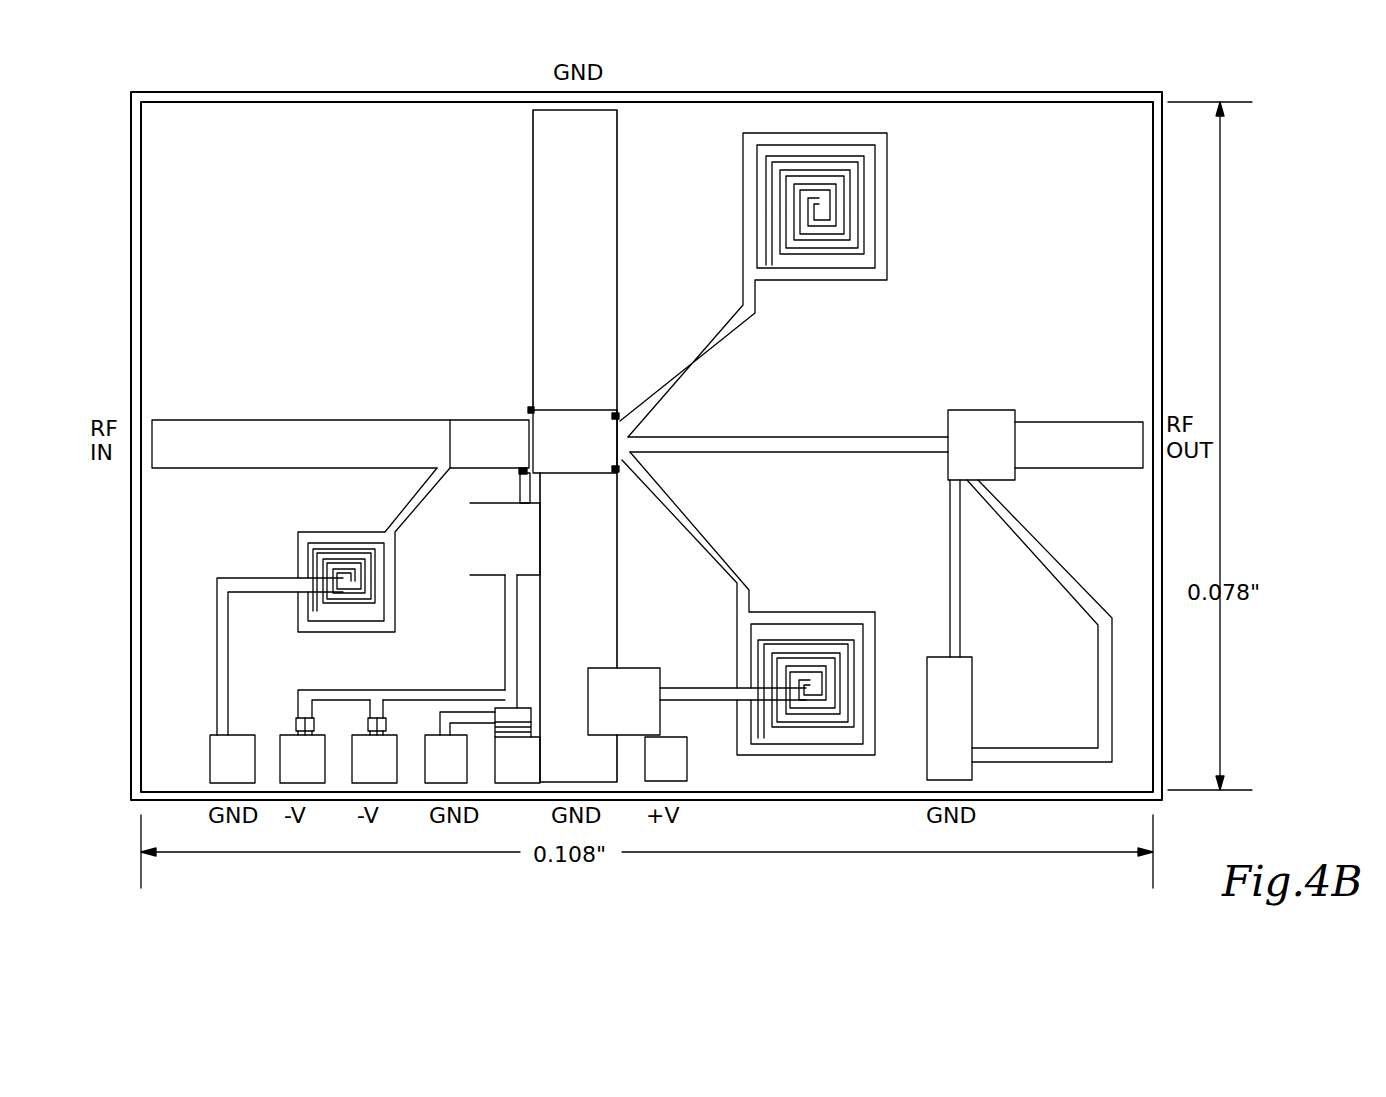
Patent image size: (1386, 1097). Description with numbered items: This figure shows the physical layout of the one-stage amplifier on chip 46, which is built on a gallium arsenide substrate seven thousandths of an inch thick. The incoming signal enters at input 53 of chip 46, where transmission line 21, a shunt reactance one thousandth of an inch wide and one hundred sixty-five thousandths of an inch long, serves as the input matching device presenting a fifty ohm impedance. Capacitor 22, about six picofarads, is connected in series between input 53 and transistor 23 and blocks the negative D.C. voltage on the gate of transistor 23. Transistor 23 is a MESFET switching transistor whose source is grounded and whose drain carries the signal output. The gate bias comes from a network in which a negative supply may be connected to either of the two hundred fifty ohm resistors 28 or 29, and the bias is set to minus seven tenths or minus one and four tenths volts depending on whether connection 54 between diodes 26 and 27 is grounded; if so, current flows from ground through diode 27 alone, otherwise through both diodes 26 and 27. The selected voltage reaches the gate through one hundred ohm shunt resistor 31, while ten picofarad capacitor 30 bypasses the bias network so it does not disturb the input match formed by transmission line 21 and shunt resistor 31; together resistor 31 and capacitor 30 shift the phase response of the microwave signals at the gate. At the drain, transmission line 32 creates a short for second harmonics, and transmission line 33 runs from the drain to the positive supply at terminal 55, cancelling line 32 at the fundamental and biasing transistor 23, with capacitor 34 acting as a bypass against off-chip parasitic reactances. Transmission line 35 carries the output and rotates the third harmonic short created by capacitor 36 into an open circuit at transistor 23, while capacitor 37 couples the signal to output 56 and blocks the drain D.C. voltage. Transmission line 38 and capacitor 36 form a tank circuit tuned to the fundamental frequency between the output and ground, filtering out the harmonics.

The chip 46 is at (723, 92).
The input 53 is at (152, 420).
The capacitor 22 is at (467, 420).
The transistor 23 is at (615, 413).
The shunt resistor 31 is at (520, 492).
The capacitor 30 is at (470, 575).
The transmission line 21 is at (298, 548).
The resistor 29 is at (297, 722).
The resistor 28 is at (368, 723).
The connection 54 is at (430, 735).
The diode 27 is at (530, 708).
The diode 26 is at (495, 730).
The capacitor 34 is at (633, 668).
The terminal 55 is at (687, 770).
The transmission line 33 is at (825, 612).
The transmission line 32 is at (890, 268).
The transmission line 35 is at (797, 437).
The capacitor 37 is at (985, 412).
The output 56 is at (1140, 421).
The transmission line 38 is at (1068, 585).
The capacitor 36 is at (972, 678).